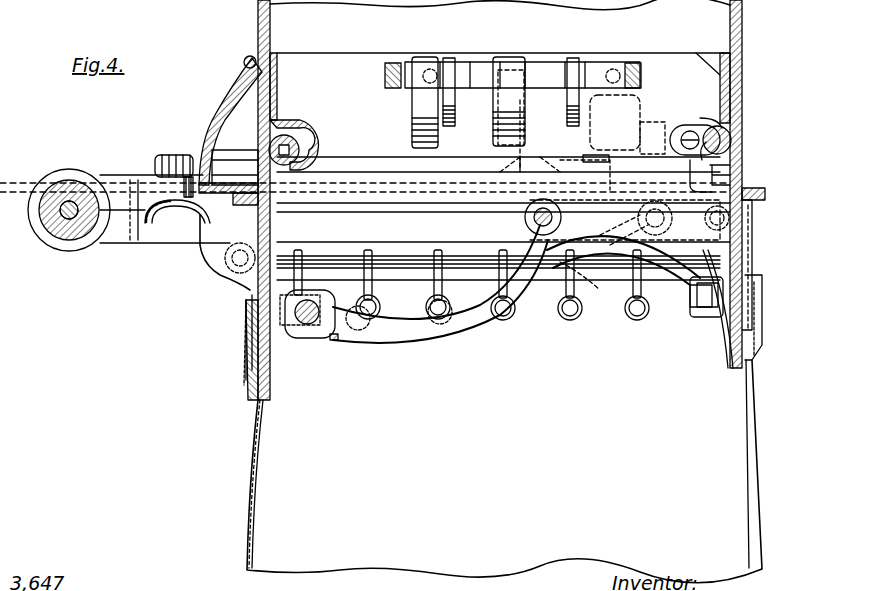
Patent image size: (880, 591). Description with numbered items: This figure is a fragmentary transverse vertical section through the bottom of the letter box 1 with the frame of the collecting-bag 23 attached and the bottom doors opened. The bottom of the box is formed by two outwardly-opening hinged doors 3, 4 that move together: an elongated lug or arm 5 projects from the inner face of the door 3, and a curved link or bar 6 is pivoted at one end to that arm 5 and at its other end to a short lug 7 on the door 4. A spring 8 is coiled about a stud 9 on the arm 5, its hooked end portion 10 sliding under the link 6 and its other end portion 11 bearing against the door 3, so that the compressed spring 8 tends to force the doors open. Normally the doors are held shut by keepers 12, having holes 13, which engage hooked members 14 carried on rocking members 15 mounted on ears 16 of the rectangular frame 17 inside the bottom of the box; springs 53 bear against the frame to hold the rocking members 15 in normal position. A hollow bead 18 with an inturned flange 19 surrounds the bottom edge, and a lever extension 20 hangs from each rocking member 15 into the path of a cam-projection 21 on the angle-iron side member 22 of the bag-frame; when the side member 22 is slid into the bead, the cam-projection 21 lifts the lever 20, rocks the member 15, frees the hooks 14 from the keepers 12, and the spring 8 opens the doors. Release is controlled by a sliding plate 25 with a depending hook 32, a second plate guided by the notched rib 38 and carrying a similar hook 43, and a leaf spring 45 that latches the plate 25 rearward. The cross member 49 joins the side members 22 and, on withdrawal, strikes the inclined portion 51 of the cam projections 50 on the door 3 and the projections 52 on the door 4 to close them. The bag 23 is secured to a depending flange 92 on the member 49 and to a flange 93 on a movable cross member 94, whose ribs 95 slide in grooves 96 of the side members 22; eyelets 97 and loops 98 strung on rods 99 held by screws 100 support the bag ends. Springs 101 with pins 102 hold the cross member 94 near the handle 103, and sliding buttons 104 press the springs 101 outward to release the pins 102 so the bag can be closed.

The letter box 1 is at (258, 22).
The door 3 is at (752, 268).
The door 4 is at (255, 318).
The lug or arm 5 is at (622, 219).
The link or bar 6 is at (478, 308).
The lug or projection 7 is at (312, 332).
The spring 8 is at (585, 262).
The stud 9 is at (645, 228).
The end portion of spring 10 is at (516, 303).
The end portion of spring 11 is at (728, 354).
The lug or keeper 12 is at (334, 338).
The hole 13 is at (698, 312).
The hooked member 14 is at (450, 122).
The rocking member 15 is at (540, 72).
The lug or ear 16 is at (386, 72).
The rectangular frame 17 is at (676, 72).
The bead or molding 18 is at (228, 98).
The bottom flange 19 is at (224, 186).
The lever extension 20 is at (510, 100).
The cam-projection 21 is at (512, 162).
The side member 22 is at (503, 248).
The collecting-bag 23 is at (504, 471).
The sliding plate 25 is at (640, 160).
The depending hook 32 is at (690, 175).
The notched rib 38 is at (595, 163).
The depending hook 43 is at (742, 172).
The leaf spring 45 is at (668, 130).
The cross member 49 is at (758, 200).
The cam projection 50 is at (758, 345).
The inclined portion 51 is at (752, 280).
The projection 52 is at (246, 335).
The spring 53 is at (420, 96).
The depending flange 92 is at (760, 314).
The flange 93 is at (252, 300).
The movable cross member 94 is at (242, 212).
The rib 95 is at (196, 222).
The groove or slot 96 is at (380, 208).
The eyelet 97 is at (625, 318).
The loop 98 is at (435, 288).
The rod 99 is at (470, 258).
The screw 100 is at (740, 222).
The spring 101 is at (130, 212).
The pin 102 is at (165, 215).
The handle 103 is at (55, 200).
The button 104 is at (166, 162).